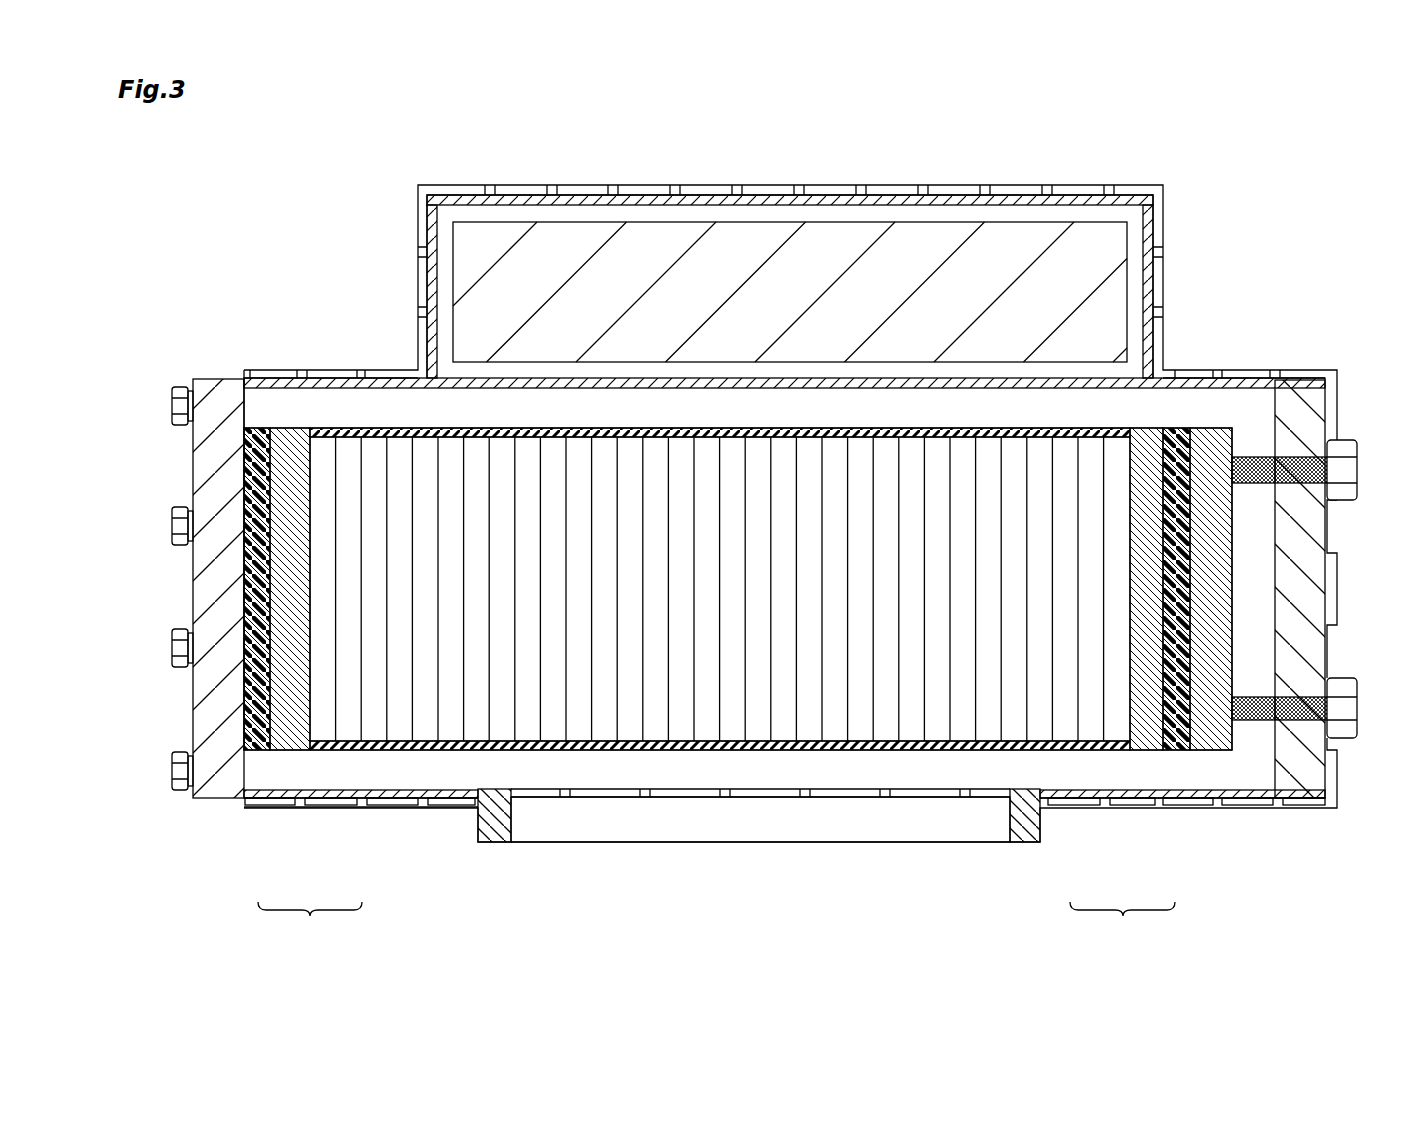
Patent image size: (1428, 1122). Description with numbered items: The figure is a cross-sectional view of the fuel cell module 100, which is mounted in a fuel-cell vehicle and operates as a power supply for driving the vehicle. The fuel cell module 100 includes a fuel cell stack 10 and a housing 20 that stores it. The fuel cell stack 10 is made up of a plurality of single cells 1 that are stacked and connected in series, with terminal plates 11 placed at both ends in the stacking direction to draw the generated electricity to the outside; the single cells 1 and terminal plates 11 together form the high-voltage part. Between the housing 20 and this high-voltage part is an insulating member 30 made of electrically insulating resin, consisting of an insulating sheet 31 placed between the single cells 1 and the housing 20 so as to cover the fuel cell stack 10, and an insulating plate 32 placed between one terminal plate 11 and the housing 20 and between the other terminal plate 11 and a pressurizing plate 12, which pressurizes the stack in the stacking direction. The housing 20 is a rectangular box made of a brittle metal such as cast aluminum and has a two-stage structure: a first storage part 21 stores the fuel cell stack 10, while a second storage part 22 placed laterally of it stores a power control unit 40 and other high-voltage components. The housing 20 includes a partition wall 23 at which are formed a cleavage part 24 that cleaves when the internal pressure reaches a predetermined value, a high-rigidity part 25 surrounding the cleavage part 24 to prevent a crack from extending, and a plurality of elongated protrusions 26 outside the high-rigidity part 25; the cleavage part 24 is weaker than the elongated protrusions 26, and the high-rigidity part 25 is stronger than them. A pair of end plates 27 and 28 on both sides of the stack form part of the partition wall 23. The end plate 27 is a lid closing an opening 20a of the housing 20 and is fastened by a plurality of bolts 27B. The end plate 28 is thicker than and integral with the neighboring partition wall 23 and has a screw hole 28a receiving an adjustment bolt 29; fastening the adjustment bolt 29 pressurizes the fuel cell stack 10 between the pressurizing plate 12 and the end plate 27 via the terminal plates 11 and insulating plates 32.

The fuel cell module 100 is at (1252, 132).
The single cell 1 is at (347, 732).
The fuel cell stack 10 is at (760, 720).
The terminal plate 11 is at (290, 752).
The pressurizing plate 12 is at (1220, 745).
The housing 20 is at (462, 95).
The opening 20a is at (240, 406).
The first storage part 21 is at (387, 366).
The second storage part 22 is at (500, 182).
The partition wall 23 is at (445, 810).
The cleavage part 24 is at (612, 800).
The high-rigidity part 25 is at (493, 843).
The elongated protrusions 26 is at (420, 806).
The end plate 27 is at (217, 788).
The bolts 27B is at (170, 405).
The end plate 28 is at (1300, 785).
The screw hole 28a is at (1292, 455).
The adjustment bolt 29 is at (1357, 470).
The insulating member 30 is at (210, 247).
The insulating sheet 31 is at (353, 426).
The insulating plate 32 is at (260, 426).
The power control unit 40 is at (820, 250).